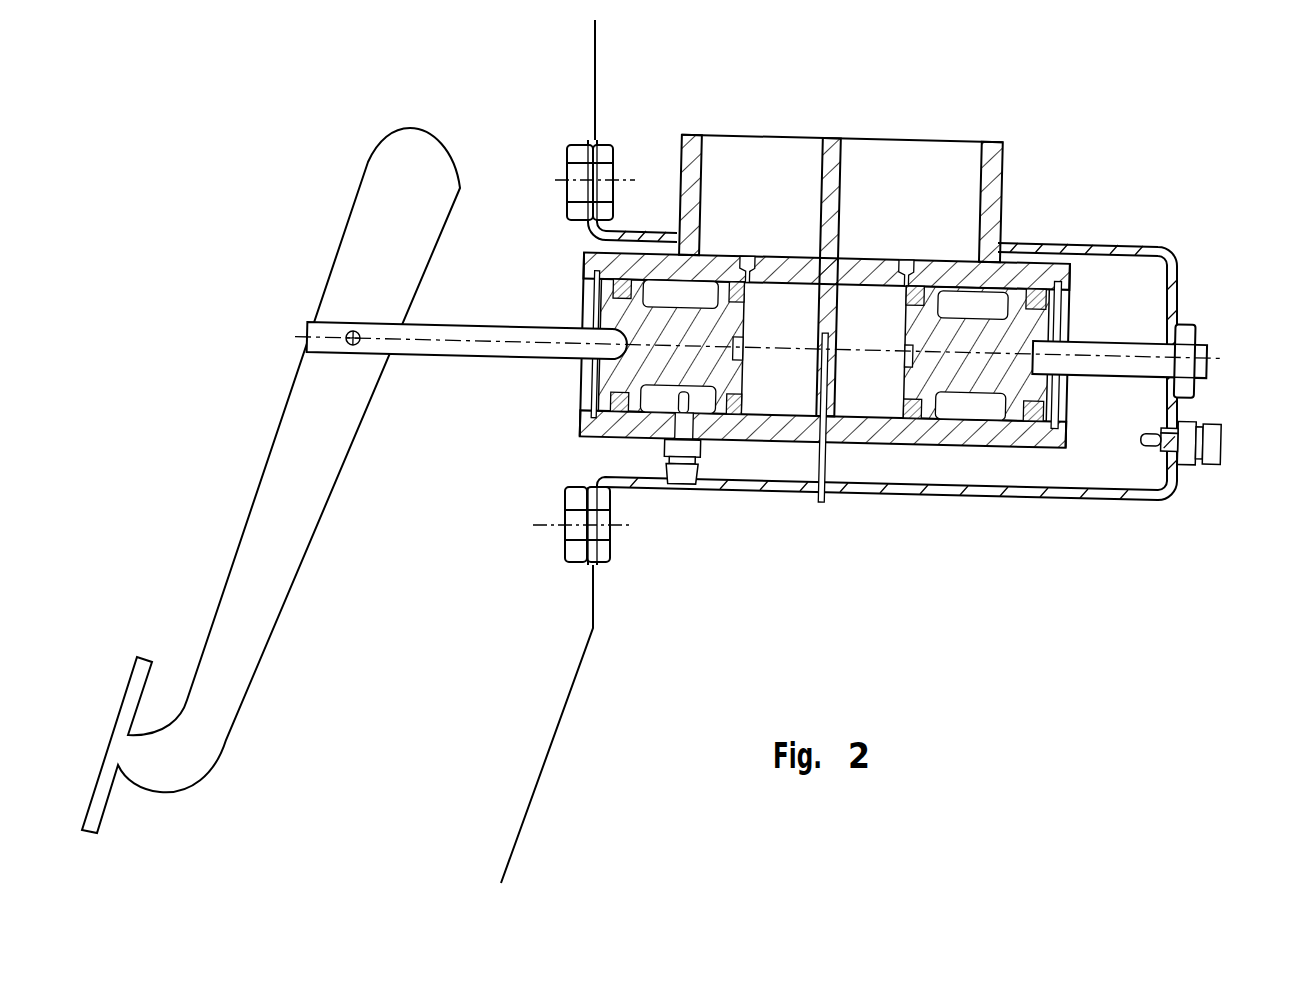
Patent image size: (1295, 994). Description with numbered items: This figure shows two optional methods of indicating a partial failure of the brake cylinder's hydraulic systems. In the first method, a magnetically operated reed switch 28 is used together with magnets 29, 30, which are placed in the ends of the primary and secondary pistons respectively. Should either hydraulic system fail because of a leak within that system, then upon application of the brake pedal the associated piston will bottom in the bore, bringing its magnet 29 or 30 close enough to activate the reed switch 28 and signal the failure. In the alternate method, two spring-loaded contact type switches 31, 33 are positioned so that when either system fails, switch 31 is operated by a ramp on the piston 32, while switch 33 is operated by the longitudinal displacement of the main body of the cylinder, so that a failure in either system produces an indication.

The reed switch 28 is at (832, 448).
The magnet 29 is at (747, 352).
The magnet 30 is at (903, 360).
The spring-loaded contact type switch 31 is at (702, 486).
The piston 32 is at (650, 392).
The spring-loaded contact type switch 33 is at (1222, 462).